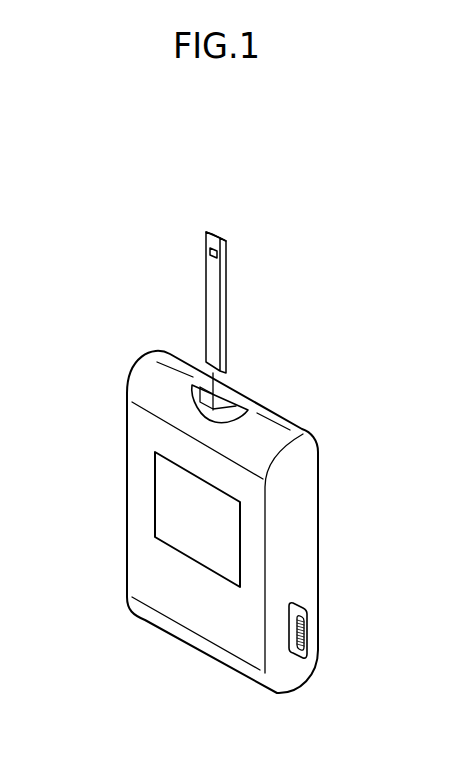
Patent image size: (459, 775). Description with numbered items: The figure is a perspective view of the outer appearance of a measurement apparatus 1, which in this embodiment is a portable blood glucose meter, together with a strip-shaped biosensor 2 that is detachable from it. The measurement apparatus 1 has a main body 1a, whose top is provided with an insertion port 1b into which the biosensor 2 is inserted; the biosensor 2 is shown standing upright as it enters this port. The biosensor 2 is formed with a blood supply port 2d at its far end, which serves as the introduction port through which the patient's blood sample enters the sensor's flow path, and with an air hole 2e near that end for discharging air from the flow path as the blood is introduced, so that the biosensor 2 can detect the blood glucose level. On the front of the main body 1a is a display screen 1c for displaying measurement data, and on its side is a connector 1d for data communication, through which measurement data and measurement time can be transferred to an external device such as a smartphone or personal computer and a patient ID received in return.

The measurement apparatus 1 is at (318, 420).
The main body 1a is at (307, 553).
The insertion port 1b is at (230, 405).
The display screen 1c is at (163, 507).
The connector 1d is at (305, 630).
The biosensor 2 is at (216, 264).
The blood supply port 2d is at (215, 229).
The air hole 2e is at (212, 255).